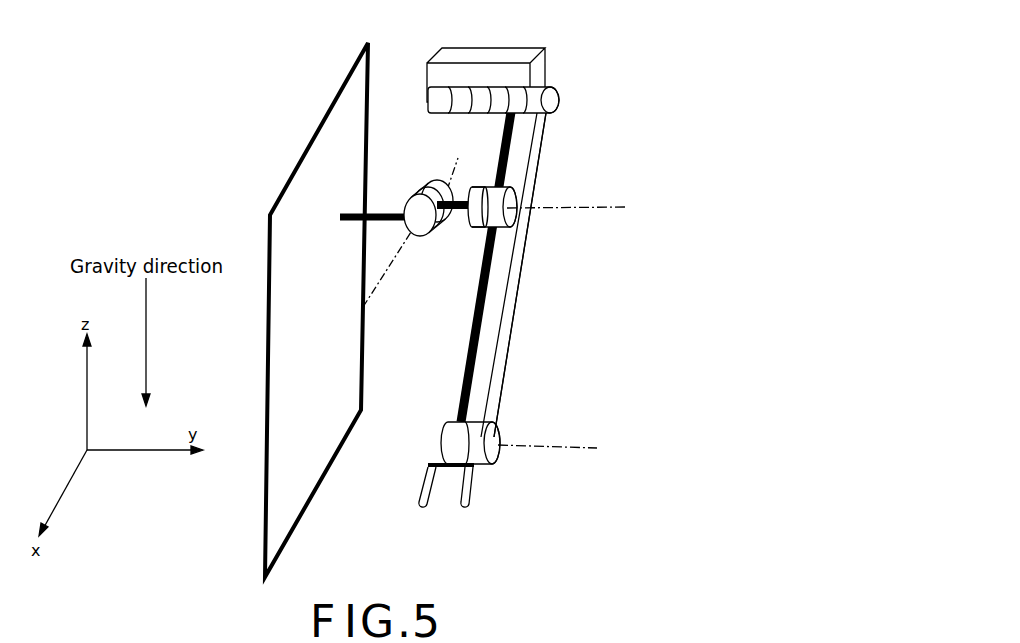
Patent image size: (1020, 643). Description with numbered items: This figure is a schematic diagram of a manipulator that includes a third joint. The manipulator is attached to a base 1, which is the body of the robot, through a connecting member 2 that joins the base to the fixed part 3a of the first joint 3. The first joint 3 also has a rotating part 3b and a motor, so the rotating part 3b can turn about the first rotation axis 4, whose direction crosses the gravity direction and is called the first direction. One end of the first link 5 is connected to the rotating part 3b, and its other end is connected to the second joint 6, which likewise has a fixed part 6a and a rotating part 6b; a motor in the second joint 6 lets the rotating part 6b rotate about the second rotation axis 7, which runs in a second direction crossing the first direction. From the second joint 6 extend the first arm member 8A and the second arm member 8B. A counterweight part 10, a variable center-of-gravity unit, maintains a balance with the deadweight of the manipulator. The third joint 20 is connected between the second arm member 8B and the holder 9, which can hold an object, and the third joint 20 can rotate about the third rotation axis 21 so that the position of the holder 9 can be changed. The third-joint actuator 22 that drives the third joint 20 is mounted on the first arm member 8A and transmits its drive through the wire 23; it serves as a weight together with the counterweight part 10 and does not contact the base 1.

The base 1 is at (288, 200).
The connecting member 2 is at (343, 223).
The first joint 3 is at (334, 149).
The fixed part 3a is at (408, 210).
The rotating part 3b is at (430, 187).
The first rotation axis 4 is at (377, 267).
The first link 5 is at (455, 212).
The second joint 6 is at (560, 189).
The fixed part 6a is at (506, 196).
The rotating part 6b is at (501, 208).
The second rotation axis 7 is at (627, 207).
The first arm member 8A is at (513, 157).
The second arm member 8B is at (493, 262).
The holder 9 is at (475, 498).
The counterweight part 10 is at (552, 72).
The third joint 20 is at (465, 440).
The third rotation axis 21 is at (597, 448).
The third-joint actuator 22 is at (560, 103).
The wire 23 is at (530, 248).